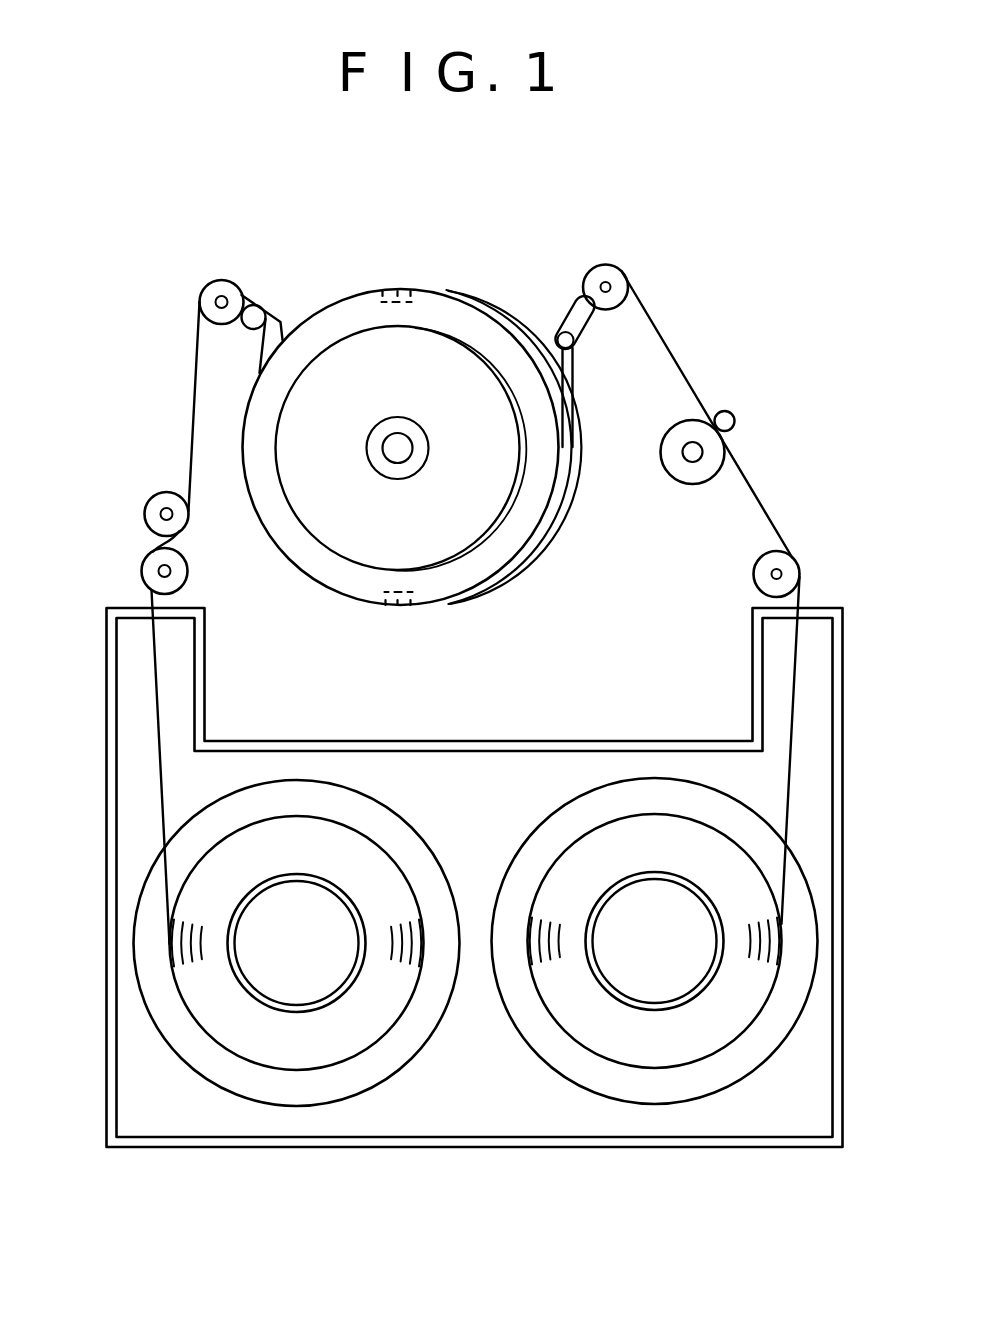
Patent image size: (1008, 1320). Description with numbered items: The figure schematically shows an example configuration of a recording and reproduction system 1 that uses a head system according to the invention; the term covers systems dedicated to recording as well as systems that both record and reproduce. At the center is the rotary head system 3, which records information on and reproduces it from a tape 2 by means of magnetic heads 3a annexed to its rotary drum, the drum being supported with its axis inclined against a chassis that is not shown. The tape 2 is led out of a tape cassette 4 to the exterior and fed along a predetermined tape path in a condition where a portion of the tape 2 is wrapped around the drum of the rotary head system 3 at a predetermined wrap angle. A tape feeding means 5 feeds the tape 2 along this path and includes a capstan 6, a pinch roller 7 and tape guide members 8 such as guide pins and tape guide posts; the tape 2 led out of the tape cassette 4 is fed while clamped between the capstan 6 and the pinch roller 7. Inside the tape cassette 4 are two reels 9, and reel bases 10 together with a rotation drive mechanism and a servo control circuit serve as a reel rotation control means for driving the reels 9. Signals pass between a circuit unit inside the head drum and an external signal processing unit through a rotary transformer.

The recording and reproduction system 1 is at (702, 212).
The tape 2 is at (191, 402).
The rotary head system 3 is at (338, 305).
The magnetic heads 3a is at (398, 294).
The tape cassette 4 is at (107, 693).
The tape feeding means 5 is at (723, 313).
The capstan 6 is at (735, 418).
The pinch roller 7 is at (687, 479).
The tape guide members 8 is at (216, 294).
The reels 9 is at (248, 997).
The reel bases 10 is at (303, 975).